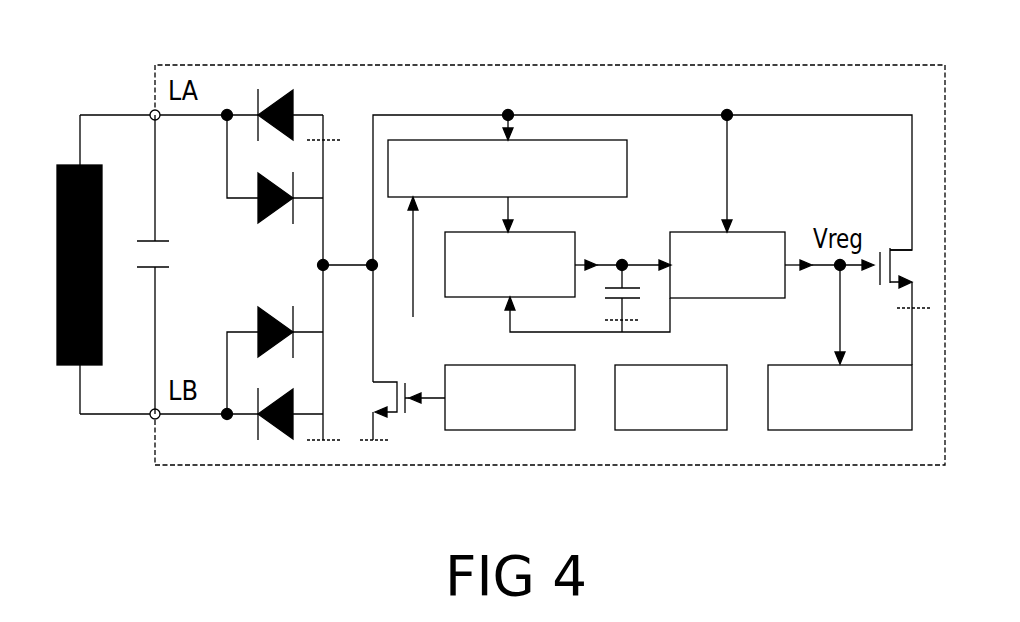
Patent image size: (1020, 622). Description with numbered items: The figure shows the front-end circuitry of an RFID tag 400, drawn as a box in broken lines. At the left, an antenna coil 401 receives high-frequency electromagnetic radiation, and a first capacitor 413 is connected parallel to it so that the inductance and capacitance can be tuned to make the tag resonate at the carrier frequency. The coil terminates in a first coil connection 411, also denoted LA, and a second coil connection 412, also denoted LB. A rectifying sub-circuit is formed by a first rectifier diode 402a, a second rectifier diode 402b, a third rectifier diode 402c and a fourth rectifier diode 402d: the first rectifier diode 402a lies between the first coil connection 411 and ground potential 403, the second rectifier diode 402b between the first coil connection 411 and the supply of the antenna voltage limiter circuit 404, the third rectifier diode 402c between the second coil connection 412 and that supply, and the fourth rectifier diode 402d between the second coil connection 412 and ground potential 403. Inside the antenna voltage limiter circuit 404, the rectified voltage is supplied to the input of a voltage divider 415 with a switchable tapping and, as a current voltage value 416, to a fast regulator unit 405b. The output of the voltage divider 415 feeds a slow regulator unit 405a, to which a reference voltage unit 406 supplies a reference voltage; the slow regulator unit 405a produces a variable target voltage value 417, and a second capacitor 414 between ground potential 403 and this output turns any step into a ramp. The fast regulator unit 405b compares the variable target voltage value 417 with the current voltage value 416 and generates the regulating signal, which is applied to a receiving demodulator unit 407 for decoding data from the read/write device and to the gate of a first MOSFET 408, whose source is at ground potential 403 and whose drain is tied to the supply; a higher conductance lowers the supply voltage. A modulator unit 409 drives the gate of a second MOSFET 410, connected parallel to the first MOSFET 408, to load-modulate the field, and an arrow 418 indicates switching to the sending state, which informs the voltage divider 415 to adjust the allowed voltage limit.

The RFID tag 400 is at (140, 47).
The antenna coil 401 is at (100, 350).
The first rectifier diode 402a is at (290, 90).
The second rectifier diode 402b is at (254, 225).
The third rectifier diode 402c is at (290, 345).
The fourth rectifier diode 402d is at (258, 440).
The ground potential 403 is at (333, 141).
The antenna voltage limiter circuit 404 is at (628, 98).
The slow regulator unit 405a is at (448, 300).
The fast regulator unit 405b is at (728, 300).
The reference voltage unit 406 is at (642, 432).
The receiving demodulator unit 407 is at (780, 432).
The first MOSFET 408 is at (878, 287).
The modulator unit 409 is at (560, 432).
The second MOSFET 410 is at (408, 408).
The first coil connection 411 is at (158, 119).
The second coil connection 412 is at (158, 420).
The first capacitor 413 is at (165, 247).
The second capacitor 414 is at (627, 301).
The voltage divider 415 is at (627, 145).
The current voltage value 416 is at (727, 148).
The variable target voltage value 417 is at (647, 262).
The arrow 418 is at (413, 318).